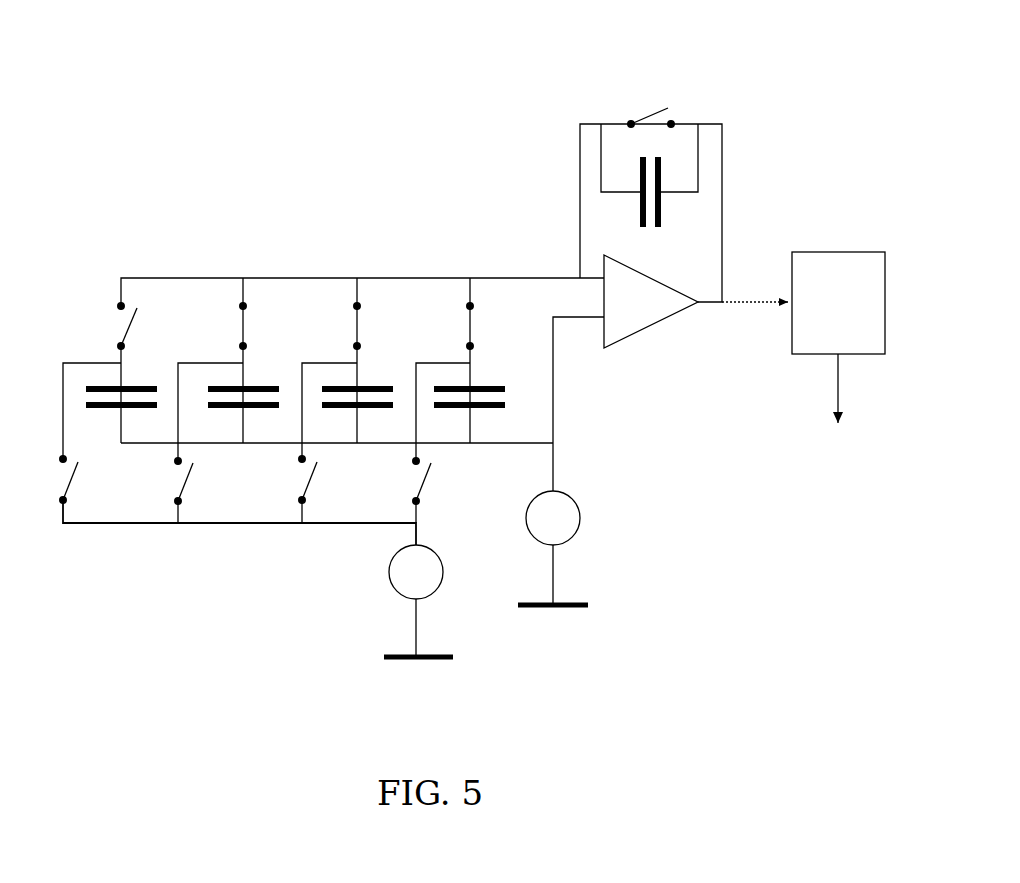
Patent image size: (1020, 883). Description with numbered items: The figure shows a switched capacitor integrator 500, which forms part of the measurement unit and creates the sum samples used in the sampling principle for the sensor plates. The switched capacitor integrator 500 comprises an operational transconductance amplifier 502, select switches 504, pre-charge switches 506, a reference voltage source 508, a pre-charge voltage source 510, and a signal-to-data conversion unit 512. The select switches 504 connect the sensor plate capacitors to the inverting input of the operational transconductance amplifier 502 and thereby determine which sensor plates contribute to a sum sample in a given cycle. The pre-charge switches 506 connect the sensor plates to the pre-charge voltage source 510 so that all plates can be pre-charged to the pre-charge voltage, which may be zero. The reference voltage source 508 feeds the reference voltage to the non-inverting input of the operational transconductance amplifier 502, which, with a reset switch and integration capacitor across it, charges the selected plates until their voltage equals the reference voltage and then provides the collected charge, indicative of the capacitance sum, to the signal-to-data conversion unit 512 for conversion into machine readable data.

The switched capacitor integrator 500 is at (355, 98).
The operational transconductance amplifier 502 is at (645, 327).
The select switches 504 is at (447, 325).
The pre-charge switches 506 is at (413, 485).
The reference voltage source 508 is at (572, 537).
The pre-charge voltage source 510 is at (390, 580).
The signal-to-data conversion unit 512 is at (837, 250).